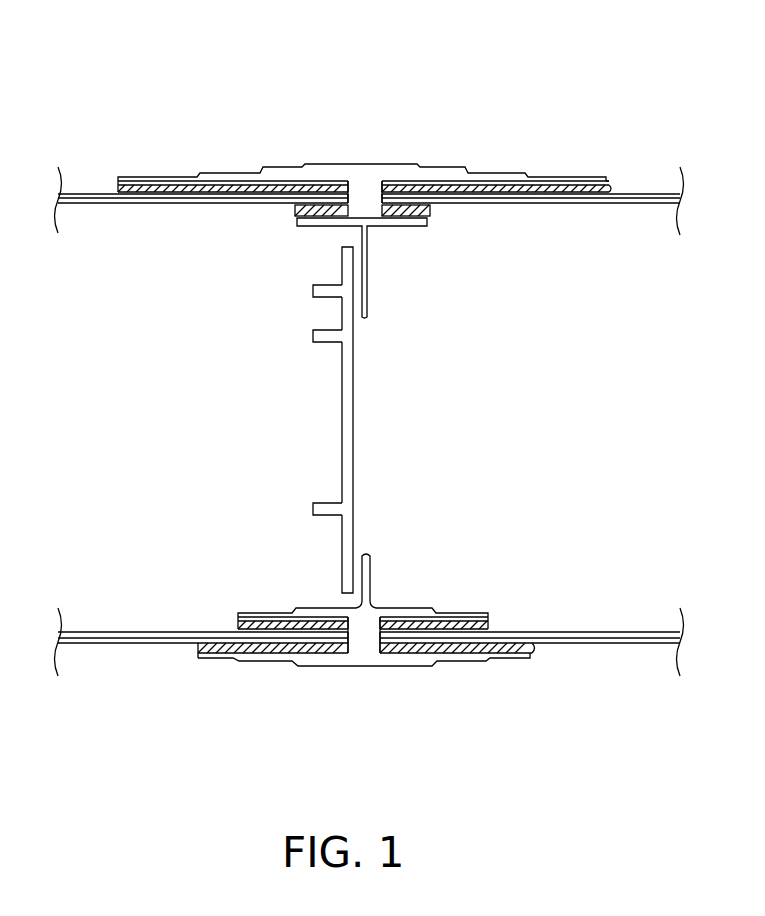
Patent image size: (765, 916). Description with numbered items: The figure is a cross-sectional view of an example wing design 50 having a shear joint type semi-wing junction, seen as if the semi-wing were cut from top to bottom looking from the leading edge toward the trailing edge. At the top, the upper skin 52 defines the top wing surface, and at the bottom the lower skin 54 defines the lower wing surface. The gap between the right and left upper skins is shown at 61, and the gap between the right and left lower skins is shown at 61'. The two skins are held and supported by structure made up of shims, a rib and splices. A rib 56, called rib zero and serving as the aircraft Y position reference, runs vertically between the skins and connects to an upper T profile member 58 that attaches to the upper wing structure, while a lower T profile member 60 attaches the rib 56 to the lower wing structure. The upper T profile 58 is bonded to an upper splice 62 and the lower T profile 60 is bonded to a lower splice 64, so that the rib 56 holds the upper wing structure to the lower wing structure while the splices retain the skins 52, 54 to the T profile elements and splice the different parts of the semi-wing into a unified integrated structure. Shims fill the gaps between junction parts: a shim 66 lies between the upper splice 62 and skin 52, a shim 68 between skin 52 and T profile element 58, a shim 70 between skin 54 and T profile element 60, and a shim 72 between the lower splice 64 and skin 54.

The wing design 50 is at (443, 93).
The upper skin 52 is at (637, 205).
The lower skin 54 is at (600, 632).
The rib 0 56 is at (354, 450).
The upper T profile member 58 is at (367, 266).
The lower T profile member 60 is at (371, 583).
The gap between right and left upper skins 61 is at (342, 157).
The gap between right and left lower skins 61' is at (334, 668).
The upper splice 62 is at (403, 163).
The lower splice 64 is at (398, 663).
The shim 66 is at (611, 187).
The shim 68 is at (430, 212).
The shim 70 is at (490, 628).
The shim 72 is at (532, 648).